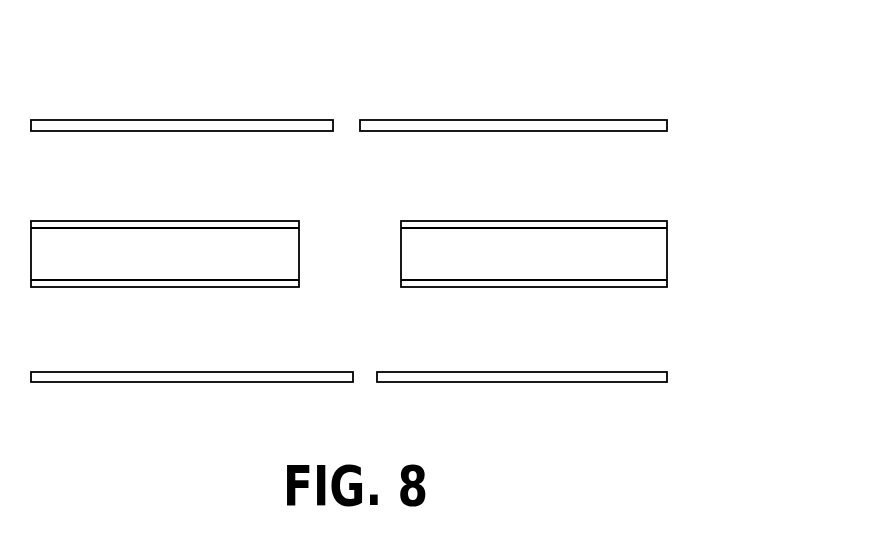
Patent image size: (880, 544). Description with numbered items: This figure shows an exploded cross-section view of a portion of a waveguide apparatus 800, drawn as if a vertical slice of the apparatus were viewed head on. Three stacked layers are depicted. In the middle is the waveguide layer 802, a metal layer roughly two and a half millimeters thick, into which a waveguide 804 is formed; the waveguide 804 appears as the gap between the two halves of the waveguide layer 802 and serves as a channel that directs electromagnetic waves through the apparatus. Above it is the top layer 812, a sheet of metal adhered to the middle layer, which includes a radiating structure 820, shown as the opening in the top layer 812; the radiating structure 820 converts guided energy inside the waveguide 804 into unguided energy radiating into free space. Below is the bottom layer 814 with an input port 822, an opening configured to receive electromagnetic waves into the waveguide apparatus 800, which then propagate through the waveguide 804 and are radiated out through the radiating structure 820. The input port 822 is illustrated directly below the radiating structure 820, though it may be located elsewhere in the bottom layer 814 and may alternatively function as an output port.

The waveguide apparatus 800 is at (688, 81).
The waveguide layer 802 is at (667, 250).
The waveguide 804 is at (347, 221).
The top layer 812 is at (460, 120).
The bottom layer 814 is at (485, 382).
The radiating structure 820 is at (345, 140).
The input port 822 is at (366, 368).